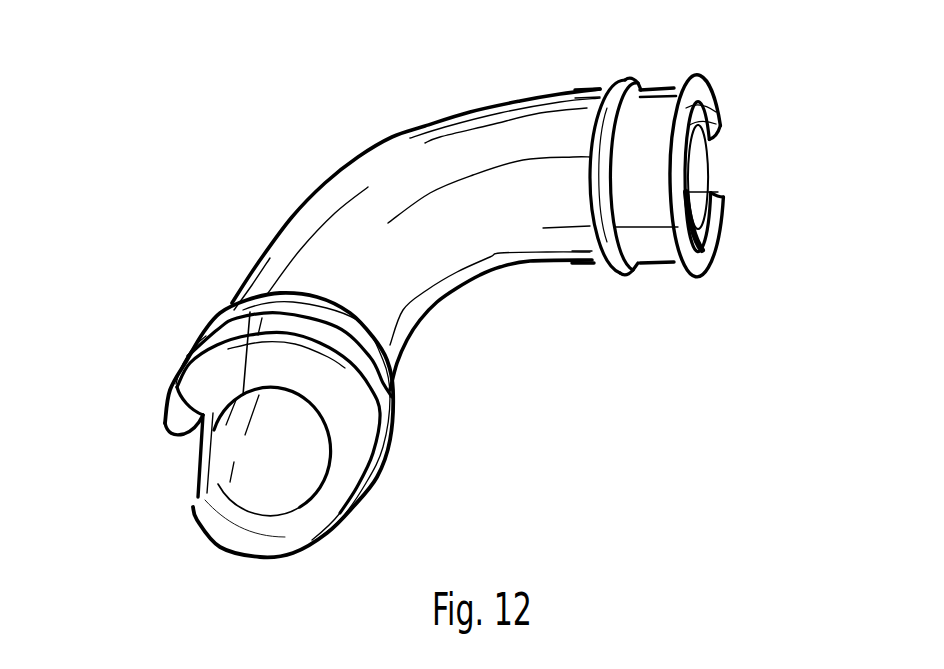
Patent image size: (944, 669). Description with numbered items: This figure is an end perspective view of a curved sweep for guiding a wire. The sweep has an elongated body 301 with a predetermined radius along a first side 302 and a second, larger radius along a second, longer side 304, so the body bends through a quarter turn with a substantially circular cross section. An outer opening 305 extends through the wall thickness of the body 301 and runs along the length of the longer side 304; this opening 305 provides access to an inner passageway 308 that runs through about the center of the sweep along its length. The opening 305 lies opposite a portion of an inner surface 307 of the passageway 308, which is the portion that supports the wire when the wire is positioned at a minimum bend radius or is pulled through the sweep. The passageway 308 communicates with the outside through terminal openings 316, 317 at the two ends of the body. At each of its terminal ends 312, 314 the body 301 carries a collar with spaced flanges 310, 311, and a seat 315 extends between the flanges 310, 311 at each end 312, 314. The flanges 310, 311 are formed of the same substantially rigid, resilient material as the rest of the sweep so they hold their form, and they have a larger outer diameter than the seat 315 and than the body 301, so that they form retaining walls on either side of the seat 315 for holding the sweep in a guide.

The elongated body 301 is at (416, 218).
The first side 302 is at (455, 302).
The second side 304 is at (359, 152).
The outer opening 305 is at (704, 138).
The inner surface 307 is at (286, 484).
The inner passageway 308 is at (705, 185).
The flange 310 is at (693, 76).
The flange 311 is at (622, 78).
The terminal end 312 is at (347, 477).
The terminal end 314 is at (708, 92).
The seat 315 is at (658, 87).
The terminal opening 316 is at (172, 443).
The terminal opening 317 is at (707, 162).